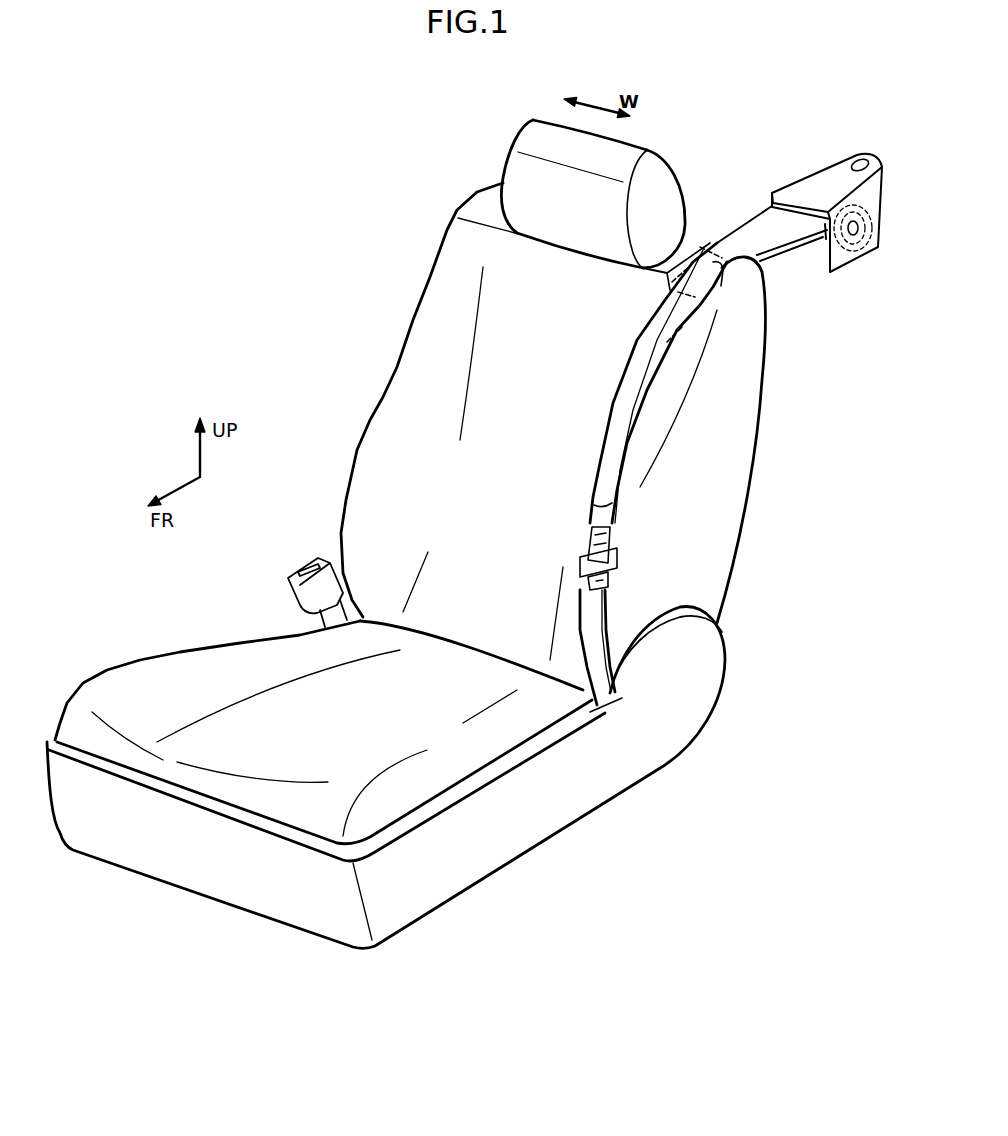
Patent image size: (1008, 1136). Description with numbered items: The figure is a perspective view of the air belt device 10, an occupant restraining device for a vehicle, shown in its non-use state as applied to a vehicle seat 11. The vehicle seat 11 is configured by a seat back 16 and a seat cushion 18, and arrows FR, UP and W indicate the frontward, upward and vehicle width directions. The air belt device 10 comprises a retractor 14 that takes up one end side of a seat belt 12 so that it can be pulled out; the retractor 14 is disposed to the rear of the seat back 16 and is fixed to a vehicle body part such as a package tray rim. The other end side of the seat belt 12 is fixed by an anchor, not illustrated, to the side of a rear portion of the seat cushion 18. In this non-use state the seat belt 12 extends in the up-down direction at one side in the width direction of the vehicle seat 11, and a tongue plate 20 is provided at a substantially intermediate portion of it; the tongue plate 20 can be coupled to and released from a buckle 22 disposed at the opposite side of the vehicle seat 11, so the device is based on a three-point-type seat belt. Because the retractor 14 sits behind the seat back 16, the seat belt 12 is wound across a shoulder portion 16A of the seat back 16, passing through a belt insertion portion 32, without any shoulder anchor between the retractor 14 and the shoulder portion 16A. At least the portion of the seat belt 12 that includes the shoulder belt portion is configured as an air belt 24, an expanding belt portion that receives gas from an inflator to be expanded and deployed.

The air belt device 10 is at (747, 174).
The vehicle seat 11 is at (346, 452).
The seat belt 12 is at (778, 257).
The retractor 14 is at (810, 183).
The seat back 16 is at (733, 473).
The shoulder portion 16A is at (688, 247).
The seat cushion 18 is at (257, 758).
The tongue plate 20 is at (615, 560).
The buckle 22 is at (333, 575).
The air belt 24 is at (633, 395).
The belt insertion portion 32 is at (728, 270).